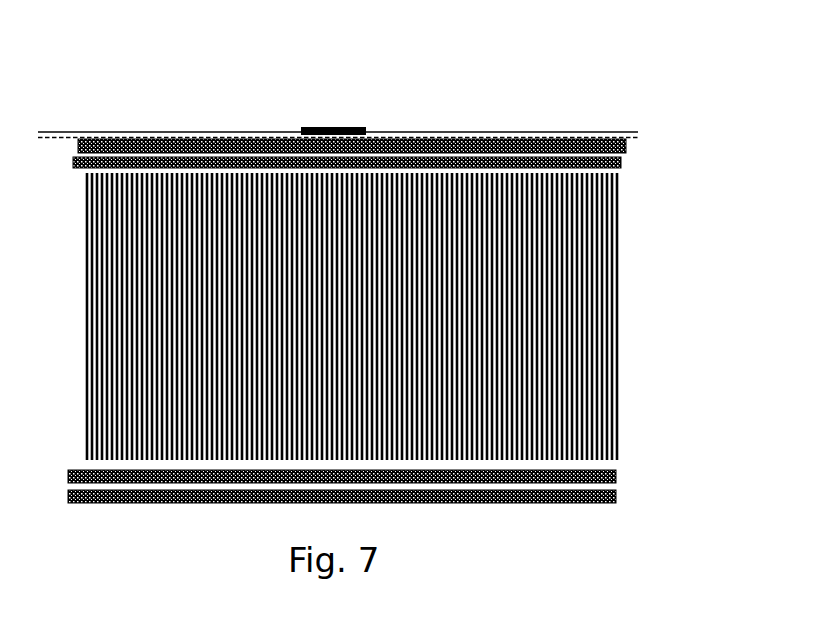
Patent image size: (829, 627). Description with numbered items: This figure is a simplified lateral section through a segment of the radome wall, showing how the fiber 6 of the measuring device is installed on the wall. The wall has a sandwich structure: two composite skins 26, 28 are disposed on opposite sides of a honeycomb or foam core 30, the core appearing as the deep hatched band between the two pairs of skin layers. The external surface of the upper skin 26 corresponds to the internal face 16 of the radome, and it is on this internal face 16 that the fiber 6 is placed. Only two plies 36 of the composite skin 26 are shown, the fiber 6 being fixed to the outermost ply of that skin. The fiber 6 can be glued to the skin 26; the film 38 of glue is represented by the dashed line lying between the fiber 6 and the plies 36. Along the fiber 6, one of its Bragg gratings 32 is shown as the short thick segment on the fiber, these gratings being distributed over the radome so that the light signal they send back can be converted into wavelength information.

The fiber 6 is at (192, 132).
The internal face 16 is at (338, 81).
The skin 26 is at (412, 137).
The skin 28 is at (520, 507).
The honeycomb or foam core 30 is at (567, 327).
The Bragg grating 32 is at (332, 128).
The plies 36 is at (333, 96).
The film of glue 38 is at (268, 137).